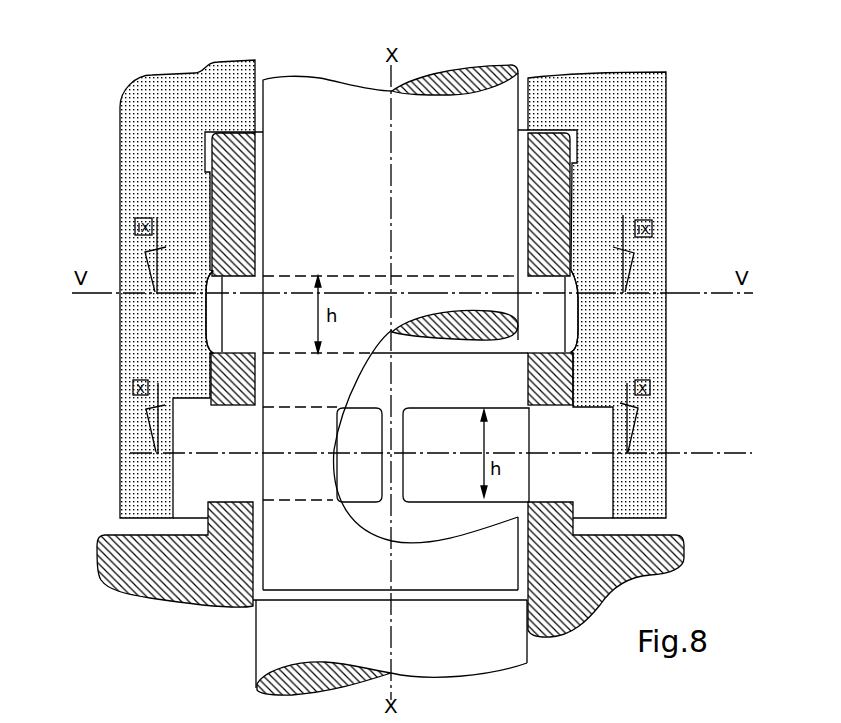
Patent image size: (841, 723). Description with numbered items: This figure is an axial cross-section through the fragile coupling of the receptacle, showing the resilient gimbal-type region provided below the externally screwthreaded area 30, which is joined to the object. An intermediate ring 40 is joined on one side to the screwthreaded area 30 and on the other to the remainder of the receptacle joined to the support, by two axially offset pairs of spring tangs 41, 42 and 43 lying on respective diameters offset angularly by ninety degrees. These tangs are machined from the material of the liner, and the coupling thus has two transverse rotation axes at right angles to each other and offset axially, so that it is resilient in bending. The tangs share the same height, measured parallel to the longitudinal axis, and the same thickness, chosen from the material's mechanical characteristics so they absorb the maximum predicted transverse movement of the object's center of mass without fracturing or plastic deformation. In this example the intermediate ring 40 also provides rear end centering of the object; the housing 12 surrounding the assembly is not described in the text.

The housing 12 is at (518, 100).
The externally screwthreaded area 30 is at (210, 187).
The intermediate ring 40 is at (575, 357).
The tang 41 is at (220, 304).
The tang 42 is at (578, 318).
The tang 43 is at (403, 439).